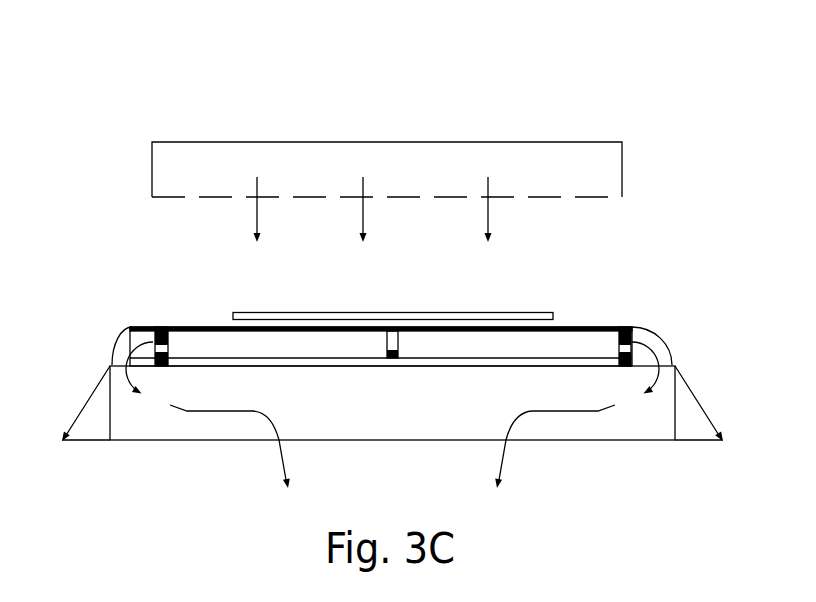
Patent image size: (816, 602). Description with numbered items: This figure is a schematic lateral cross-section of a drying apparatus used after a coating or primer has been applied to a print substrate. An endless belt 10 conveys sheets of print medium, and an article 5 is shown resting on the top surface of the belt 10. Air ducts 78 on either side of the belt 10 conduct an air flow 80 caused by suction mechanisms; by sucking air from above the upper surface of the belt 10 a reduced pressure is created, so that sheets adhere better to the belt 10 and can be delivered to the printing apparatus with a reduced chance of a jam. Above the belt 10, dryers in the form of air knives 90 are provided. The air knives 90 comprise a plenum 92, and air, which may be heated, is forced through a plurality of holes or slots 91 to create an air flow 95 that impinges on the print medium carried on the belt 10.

The article 5 is at (532, 312).
The belt 10 is at (207, 348).
The air ducts 78 is at (122, 333).
The air flow 80 is at (392, 446).
The air knives 90 is at (238, 90).
The holes or slots 91 is at (191, 198).
The plenum 92 is at (587, 152).
The air flow 95 is at (389, 209).